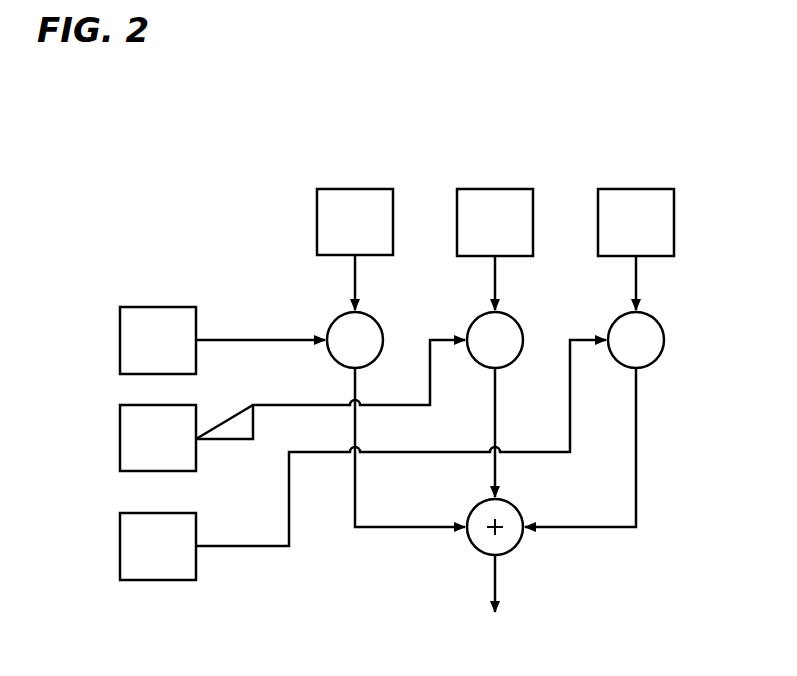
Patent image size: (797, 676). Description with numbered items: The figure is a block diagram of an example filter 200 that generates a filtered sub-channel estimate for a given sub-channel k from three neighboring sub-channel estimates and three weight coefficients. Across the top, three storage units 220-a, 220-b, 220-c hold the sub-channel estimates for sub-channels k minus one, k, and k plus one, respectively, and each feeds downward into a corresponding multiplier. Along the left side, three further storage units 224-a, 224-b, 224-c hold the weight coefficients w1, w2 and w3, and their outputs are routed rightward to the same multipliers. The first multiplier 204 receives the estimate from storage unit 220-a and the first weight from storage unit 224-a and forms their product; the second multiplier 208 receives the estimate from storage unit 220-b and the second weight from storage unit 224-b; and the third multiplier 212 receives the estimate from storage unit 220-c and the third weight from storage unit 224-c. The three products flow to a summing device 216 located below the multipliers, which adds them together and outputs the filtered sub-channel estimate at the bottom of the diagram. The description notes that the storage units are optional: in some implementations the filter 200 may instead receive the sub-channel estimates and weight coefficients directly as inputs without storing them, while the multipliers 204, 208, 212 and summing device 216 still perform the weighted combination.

The filter 200 is at (628, 66).
The storage unit 220-a is at (355, 189).
The storage unit 220-b is at (495, 189).
The storage unit 220-c is at (636, 189).
The storage unit 224-a is at (158, 307).
The storage unit 224-b is at (138, 405).
The storage unit 224-c is at (138, 513).
The multiplier 204 is at (371, 316).
The multiplier 208 is at (511, 316).
The multiplier 212 is at (652, 316).
The summing device 216 is at (513, 550).